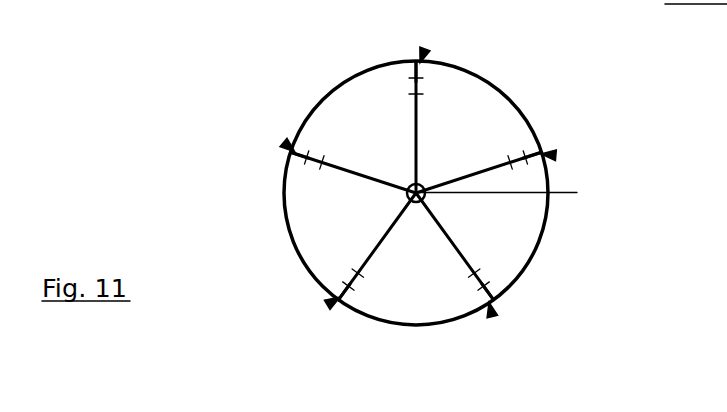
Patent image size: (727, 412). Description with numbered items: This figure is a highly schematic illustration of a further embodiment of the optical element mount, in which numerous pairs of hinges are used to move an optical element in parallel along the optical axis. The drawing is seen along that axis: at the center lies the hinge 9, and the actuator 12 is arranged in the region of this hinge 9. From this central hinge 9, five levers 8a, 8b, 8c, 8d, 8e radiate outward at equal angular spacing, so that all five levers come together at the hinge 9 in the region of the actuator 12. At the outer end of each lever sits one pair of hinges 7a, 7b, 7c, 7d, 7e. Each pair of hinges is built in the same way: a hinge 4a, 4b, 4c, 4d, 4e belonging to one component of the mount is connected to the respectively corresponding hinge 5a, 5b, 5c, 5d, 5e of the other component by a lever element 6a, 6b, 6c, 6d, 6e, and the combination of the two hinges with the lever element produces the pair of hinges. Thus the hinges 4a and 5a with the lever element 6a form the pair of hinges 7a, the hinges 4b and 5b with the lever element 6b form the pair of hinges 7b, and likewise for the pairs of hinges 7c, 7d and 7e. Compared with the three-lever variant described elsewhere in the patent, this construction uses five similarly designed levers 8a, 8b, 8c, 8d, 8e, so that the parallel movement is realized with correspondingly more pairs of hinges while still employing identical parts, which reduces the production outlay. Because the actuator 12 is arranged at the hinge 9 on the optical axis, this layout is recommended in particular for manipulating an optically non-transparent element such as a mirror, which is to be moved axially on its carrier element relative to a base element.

The actuator 12 is at (421, 179).
The hinge 9 is at (507, 191).
The lever 8a is at (415, 140).
The lever 8b is at (362, 177).
The lever 8c is at (387, 237).
The lever 8d is at (450, 236).
The lever 8e is at (466, 177).
The hinge 4a is at (411, 78).
The hinge 4b is at (305, 158).
The hinge 4c is at (349, 288).
The hinge 4d is at (486, 291).
The hinge 4e is at (525, 157).
The hinge 5a is at (408, 94).
The hinge 5b is at (322, 162).
The hinge 5c is at (359, 274).
The hinge 5d is at (474, 273).
The hinge 5e is at (511, 160).
The lever element 6a is at (410, 78).
The lever element 6b is at (307, 157).
The lever element 6c is at (351, 288).
The lever element 6d is at (487, 279).
The lever element 6e is at (526, 156).
The pair of hinges 7a is at (420, 63).
The pair of hinges 7b is at (295, 152).
The pair of hinges 7c is at (340, 297).
The pair of hinges 7d is at (489, 302).
The pair of hinges 7e is at (541, 154).